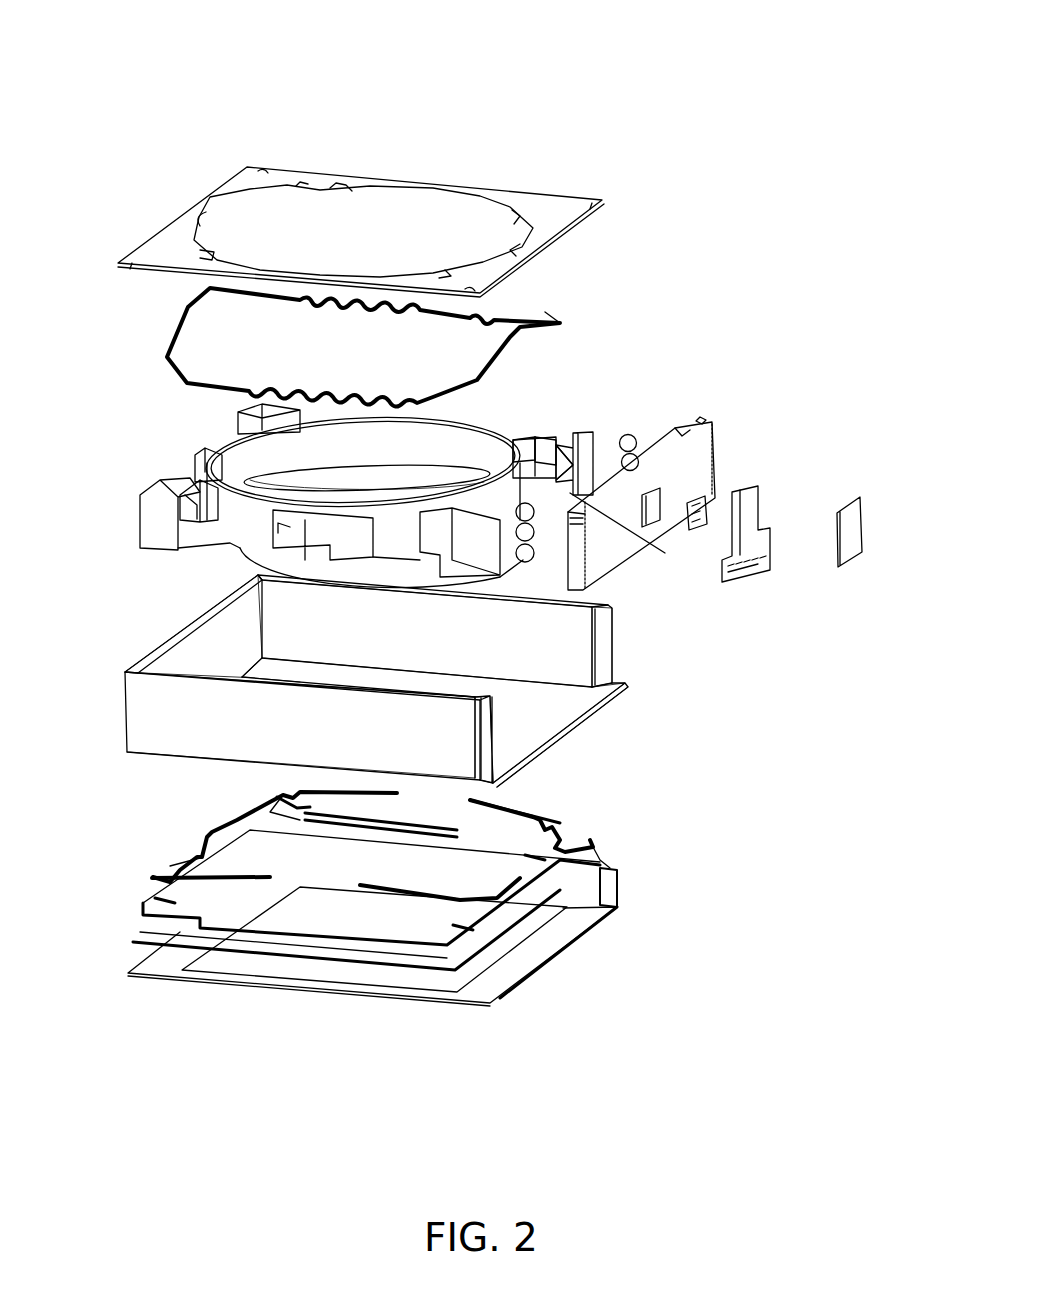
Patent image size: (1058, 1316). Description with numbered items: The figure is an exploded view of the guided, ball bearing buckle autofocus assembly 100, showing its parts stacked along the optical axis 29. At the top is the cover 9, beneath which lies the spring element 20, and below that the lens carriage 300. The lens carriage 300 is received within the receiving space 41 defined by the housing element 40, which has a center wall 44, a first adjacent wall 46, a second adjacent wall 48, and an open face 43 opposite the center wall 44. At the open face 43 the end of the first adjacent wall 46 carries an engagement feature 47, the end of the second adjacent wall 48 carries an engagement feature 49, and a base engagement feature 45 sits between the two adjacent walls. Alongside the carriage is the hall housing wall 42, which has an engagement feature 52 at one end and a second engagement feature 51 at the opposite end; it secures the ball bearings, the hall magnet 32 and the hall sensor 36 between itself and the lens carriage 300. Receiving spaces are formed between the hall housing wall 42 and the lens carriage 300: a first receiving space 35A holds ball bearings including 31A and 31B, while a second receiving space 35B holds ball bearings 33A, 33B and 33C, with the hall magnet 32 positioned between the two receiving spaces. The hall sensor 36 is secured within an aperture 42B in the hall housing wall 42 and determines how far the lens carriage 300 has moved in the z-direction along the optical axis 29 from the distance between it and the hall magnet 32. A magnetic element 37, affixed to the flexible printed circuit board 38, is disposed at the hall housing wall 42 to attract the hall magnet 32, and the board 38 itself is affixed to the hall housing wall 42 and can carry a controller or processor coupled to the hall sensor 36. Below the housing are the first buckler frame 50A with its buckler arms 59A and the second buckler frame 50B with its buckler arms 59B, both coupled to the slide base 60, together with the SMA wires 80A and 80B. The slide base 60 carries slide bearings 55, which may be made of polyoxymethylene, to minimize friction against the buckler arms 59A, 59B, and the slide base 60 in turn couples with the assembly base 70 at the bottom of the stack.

The assembly 100 is at (653, 68).
The cover 9 is at (335, 160).
The spring element 20 is at (560, 325).
The optical axis 29 is at (349, 490).
The lens carriage 300 is at (165, 410).
The first receiving space 35A is at (533, 445).
The second receiving space 35B is at (548, 468).
The ball bearing 33A is at (577, 437).
The ball bearing 31A is at (637, 440).
The ball bearing 31B is at (640, 455).
The engagement feature 52 is at (707, 417).
The hall housing wall 42 is at (708, 455).
The aperture 42B is at (662, 490).
The hall sensor 36 is at (700, 505).
The second engagement feature 51 is at (633, 534).
The hall magnet 32 is at (536, 512).
The ball bearing 33B is at (536, 532).
The ball bearing 33C is at (536, 553).
The flexible printed circuit board 38 is at (760, 570).
The magnetic element 37 is at (855, 545).
The housing element 40 is at (150, 642).
The receiving space 41 is at (285, 672).
The center wall 44 is at (193, 626).
The first adjacent wall 46 is at (427, 633).
The second adjacent wall 48 is at (301, 725).
The open face 43 is at (559, 733).
The engagement feature 47 is at (612, 650).
The base engagement feature 45 is at (588, 717).
The engagement feature 49 is at (490, 737).
The assembly base 70 is at (562, 943).
The SMA wire 80A is at (300, 955).
The SMA wire 80B is at (360, 822).
The slide base 60 is at (140, 904).
The first buckler frame 50A is at (183, 870).
The second buckler frame 50B is at (590, 826).
The buckler arms 59A is at (270, 878).
The buckler arms 59B is at (360, 885).
The slide bearings 55 is at (270, 805).